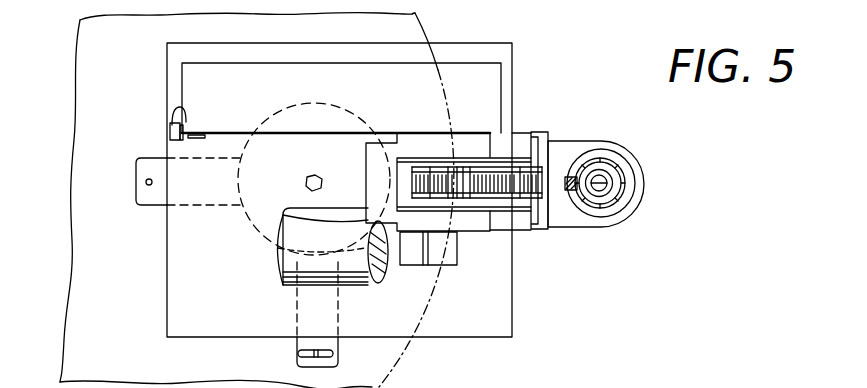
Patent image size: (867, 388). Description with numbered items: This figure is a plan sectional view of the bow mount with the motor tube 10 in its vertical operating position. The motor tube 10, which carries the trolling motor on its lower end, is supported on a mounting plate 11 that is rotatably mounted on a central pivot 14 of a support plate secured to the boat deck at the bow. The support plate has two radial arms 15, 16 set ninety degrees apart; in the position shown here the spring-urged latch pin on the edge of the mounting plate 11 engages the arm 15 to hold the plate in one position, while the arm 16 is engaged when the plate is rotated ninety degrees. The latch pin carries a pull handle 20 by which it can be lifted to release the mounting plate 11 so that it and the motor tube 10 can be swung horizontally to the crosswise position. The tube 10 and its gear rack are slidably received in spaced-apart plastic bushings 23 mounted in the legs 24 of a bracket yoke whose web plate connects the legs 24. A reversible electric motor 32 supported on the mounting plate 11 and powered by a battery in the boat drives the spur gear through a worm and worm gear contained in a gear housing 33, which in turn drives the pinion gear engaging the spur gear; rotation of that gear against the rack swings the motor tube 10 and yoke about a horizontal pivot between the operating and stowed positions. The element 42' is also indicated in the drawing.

The motor tube 10 is at (623, 168).
The mounting plate 11 is at (175, 298).
The central pivot 14 is at (309, 175).
The radial arm 15 is at (143, 167).
The radial arm 16 is at (320, 367).
The pull handle 20 is at (297, 354).
The plastic bushings 23 is at (628, 192).
The legs of bracket yoke 24 is at (577, 143).
The reversible electric motor 32 is at (280, 264).
The gear housing 33 is at (417, 256).
The lock housing 42' is at (457, 158).